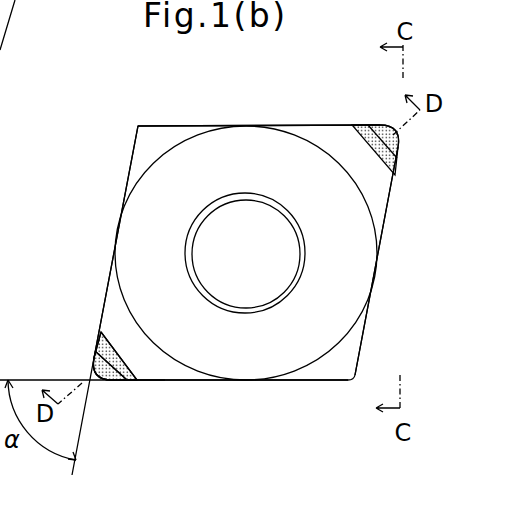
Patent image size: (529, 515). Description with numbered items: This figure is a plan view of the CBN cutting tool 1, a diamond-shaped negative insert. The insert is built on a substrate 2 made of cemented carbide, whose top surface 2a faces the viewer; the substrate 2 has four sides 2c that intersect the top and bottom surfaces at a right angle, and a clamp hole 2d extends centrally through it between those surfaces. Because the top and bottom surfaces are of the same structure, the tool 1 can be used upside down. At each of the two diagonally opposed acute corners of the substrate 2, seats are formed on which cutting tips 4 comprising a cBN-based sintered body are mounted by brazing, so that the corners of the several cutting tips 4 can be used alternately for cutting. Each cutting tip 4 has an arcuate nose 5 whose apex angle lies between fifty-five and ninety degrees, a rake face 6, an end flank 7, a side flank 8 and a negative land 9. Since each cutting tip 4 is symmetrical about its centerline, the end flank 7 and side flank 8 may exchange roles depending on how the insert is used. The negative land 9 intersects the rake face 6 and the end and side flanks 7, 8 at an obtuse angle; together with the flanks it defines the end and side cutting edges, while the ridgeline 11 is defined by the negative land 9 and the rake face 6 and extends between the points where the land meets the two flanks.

The CBN cutting tool 1 is at (394, 244).
The substrate 2 is at (336, 373).
The top surface 2a is at (218, 158).
The sides 2c is at (15, 10).
The clamp hole 2d is at (300, 274).
The cutting tip 4 is at (407, 156).
The arcuate nose 5 is at (100, 373).
The rake face 6 is at (158, 380).
The end flank 7 is at (133, 380).
The side flank 8 is at (98, 333).
The negative land 9 is at (100, 358).
The ridgeline 11 is at (113, 356).